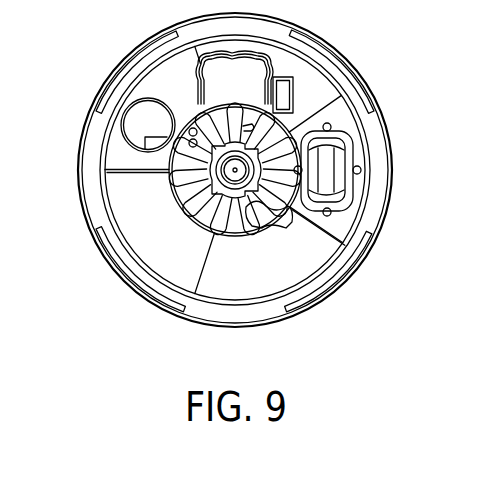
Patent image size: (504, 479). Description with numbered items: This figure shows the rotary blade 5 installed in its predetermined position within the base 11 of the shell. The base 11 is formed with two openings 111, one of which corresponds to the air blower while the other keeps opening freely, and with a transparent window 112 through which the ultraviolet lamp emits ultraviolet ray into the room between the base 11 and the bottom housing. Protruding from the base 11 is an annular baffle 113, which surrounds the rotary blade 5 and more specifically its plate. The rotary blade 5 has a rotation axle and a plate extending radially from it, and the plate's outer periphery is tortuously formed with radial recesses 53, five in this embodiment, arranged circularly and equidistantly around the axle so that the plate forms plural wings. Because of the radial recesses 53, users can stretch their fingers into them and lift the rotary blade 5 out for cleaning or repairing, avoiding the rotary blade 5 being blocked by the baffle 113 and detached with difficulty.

The base 11 is at (165, 78).
The opening 111 is at (283, 92).
The transparent window 112 is at (342, 157).
The annular baffle 113 is at (221, 181).
The rotary blade 5 is at (220, 183).
The radial recess 53 is at (250, 216).